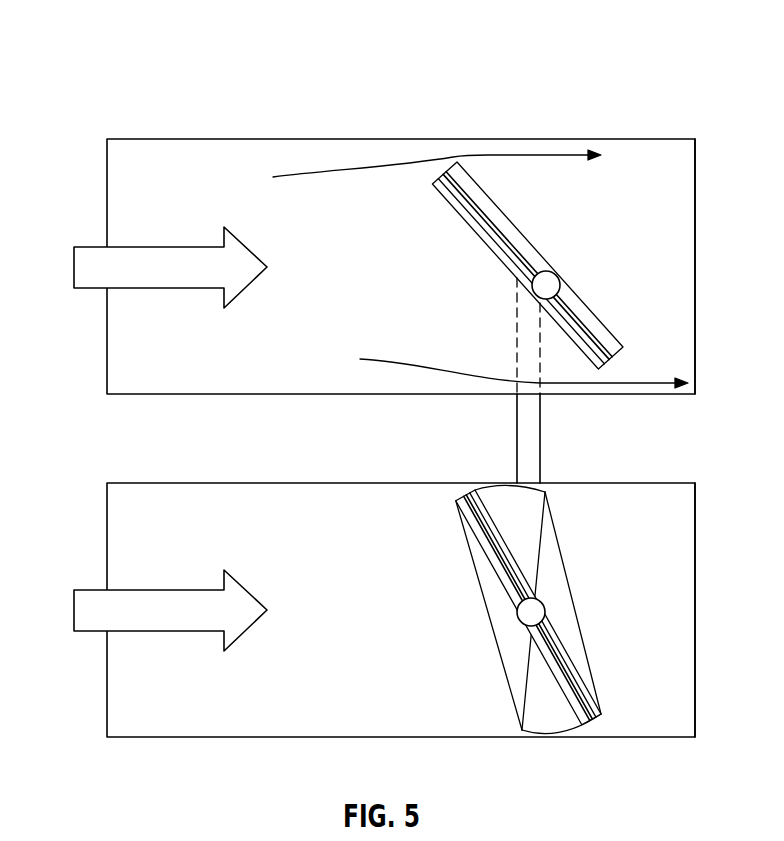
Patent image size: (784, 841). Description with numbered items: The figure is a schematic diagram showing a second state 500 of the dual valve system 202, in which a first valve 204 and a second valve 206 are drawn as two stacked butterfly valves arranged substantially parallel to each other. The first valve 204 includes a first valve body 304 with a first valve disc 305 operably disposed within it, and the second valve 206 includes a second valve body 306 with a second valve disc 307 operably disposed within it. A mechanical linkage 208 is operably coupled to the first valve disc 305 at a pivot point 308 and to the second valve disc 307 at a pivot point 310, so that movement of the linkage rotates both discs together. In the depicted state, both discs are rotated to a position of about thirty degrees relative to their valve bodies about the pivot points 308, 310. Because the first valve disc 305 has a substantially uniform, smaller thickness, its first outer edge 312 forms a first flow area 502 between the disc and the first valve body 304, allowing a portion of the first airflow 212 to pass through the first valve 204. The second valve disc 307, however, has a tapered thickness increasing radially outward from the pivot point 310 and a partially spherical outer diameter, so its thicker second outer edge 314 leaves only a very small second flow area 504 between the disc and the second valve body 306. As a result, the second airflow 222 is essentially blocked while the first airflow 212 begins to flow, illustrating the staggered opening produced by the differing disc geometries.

The second state 500 is at (126, 39).
The dual valve system 202 is at (311, 103).
The first valve 204 is at (136, 139).
The second valve 206 is at (137, 483).
The mechanical linkage 208 is at (542, 450).
The first airflow 212 is at (95, 246).
The second airflow 222 is at (95, 590).
The first valve body 304 is at (668, 139).
The first valve disc 305 is at (507, 249).
The second valve body 306 is at (668, 483).
The second valve disc 307 is at (488, 627).
The pivot point 308 is at (543, 283).
The pivot point 310 is at (534, 615).
The first outer edge 312 is at (452, 162).
The second outer edge 314 is at (465, 492).
The first flow area 502 is at (297, 174).
The second flow area 504 is at (472, 488).